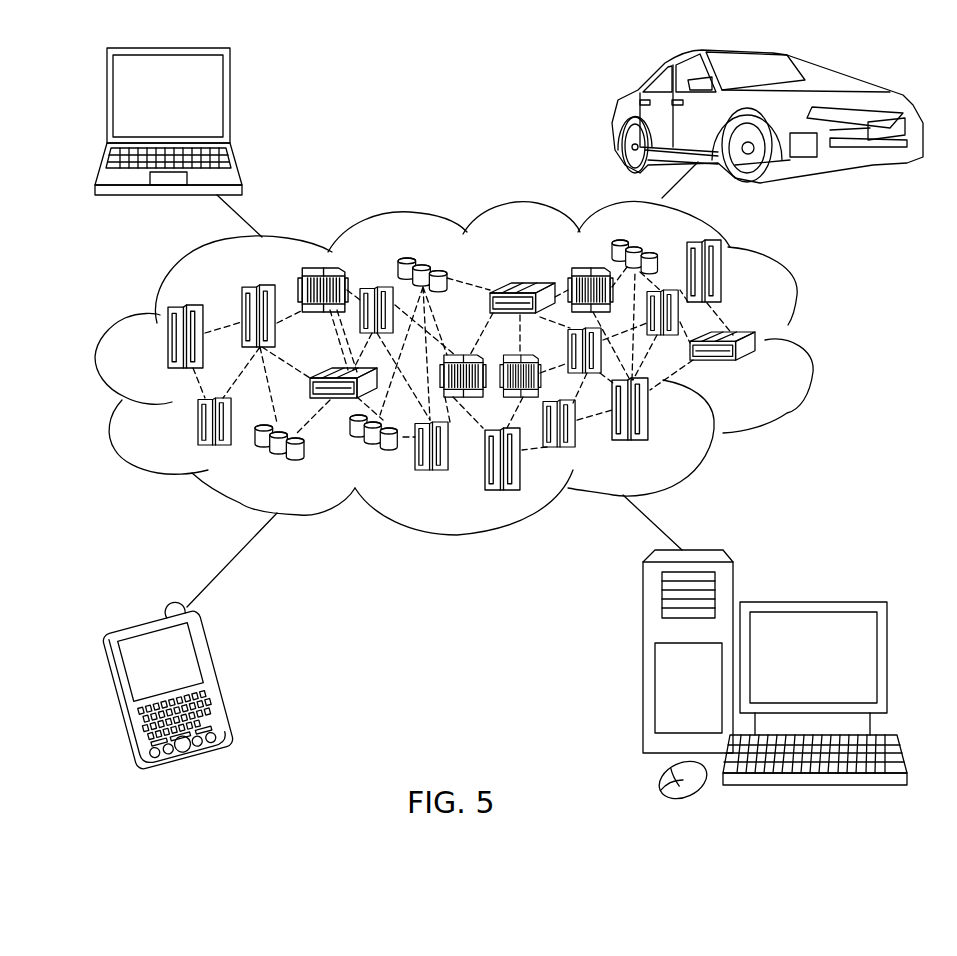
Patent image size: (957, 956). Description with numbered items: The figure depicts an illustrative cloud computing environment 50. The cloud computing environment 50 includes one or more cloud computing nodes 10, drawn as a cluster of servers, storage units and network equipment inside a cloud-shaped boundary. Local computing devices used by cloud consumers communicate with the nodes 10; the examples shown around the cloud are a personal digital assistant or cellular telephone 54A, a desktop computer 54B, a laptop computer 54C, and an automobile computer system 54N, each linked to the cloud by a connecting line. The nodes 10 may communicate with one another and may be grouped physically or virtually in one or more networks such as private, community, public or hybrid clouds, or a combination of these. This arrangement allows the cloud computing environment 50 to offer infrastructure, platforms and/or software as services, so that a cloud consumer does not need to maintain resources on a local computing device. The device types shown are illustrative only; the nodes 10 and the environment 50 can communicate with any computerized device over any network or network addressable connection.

The cloud computing node 10 is at (768, 375).
The cloud computing environment 50 is at (810, 345).
The personal digital assistant (PDA) or cellular telephone 54A is at (220, 680).
The desktop computer 54B is at (810, 600).
The laptop computer 54C is at (230, 102).
The automobile computer system 54N is at (615, 116).